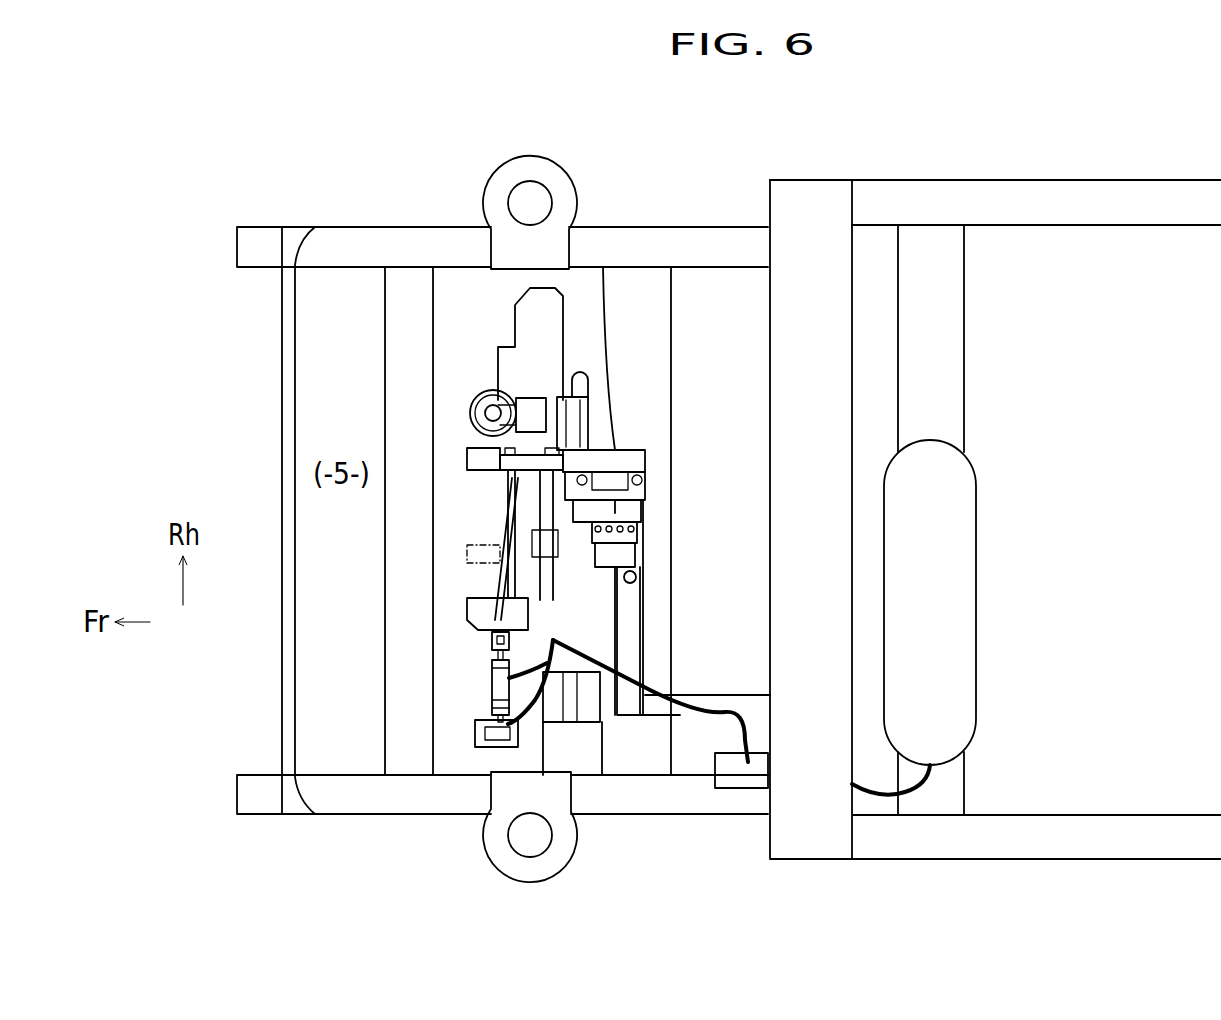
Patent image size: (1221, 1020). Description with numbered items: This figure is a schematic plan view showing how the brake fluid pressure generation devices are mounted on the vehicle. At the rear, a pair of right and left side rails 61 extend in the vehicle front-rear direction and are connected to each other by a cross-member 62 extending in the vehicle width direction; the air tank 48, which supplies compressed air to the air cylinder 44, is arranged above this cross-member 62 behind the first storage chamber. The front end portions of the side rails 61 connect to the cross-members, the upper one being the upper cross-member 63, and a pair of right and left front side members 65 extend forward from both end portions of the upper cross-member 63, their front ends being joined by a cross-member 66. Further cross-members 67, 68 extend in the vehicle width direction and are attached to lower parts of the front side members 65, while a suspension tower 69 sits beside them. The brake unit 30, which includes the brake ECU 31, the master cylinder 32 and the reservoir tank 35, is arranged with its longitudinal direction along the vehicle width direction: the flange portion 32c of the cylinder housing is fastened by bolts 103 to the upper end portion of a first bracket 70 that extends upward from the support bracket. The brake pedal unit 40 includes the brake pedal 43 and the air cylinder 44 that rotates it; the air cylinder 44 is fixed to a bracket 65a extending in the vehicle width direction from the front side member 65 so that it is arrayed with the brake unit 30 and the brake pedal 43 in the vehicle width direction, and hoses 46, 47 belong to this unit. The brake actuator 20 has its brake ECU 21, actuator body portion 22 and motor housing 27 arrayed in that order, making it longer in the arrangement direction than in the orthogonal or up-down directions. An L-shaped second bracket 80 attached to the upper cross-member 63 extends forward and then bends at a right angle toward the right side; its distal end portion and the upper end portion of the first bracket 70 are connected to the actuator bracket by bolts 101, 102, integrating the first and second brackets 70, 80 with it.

The brake actuator 20 is at (650, 520).
The brake ECU 21 is at (622, 515).
The actuator body portion 22 is at (648, 538).
The motor housing 27 is at (638, 582).
The brake unit 30 is at (595, 375).
The brake ECU 31 is at (598, 422).
The master cylinder 32 is at (500, 405).
The flange portion 32c is at (467, 447).
The reservoir tank 35 is at (550, 313).
The brake pedal unit 40 is at (470, 570).
The brake pedal 43 is at (478, 625).
The air cylinder 44 is at (492, 693).
The hose 46 is at (700, 720).
The hose 47 is at (875, 792).
The air tank 48 is at (940, 632).
The side rails 61 is at (1100, 205).
The cross-member 62 is at (938, 313).
The upper cross-member 63 is at (778, 830).
The front side members 65 is at (706, 245).
The bracket 65a is at (537, 738).
The cross-member 66 is at (282, 425).
The cross-member 67 is at (397, 370).
The cross-member 68 is at (638, 298).
The suspension tower 69 is at (490, 187).
The first bracket 70 is at (480, 518).
The second bracket 80 is at (647, 720).
The bolt 101 is at (643, 468).
The bolt 102 is at (641, 560).
The bolts 103 is at (480, 487).